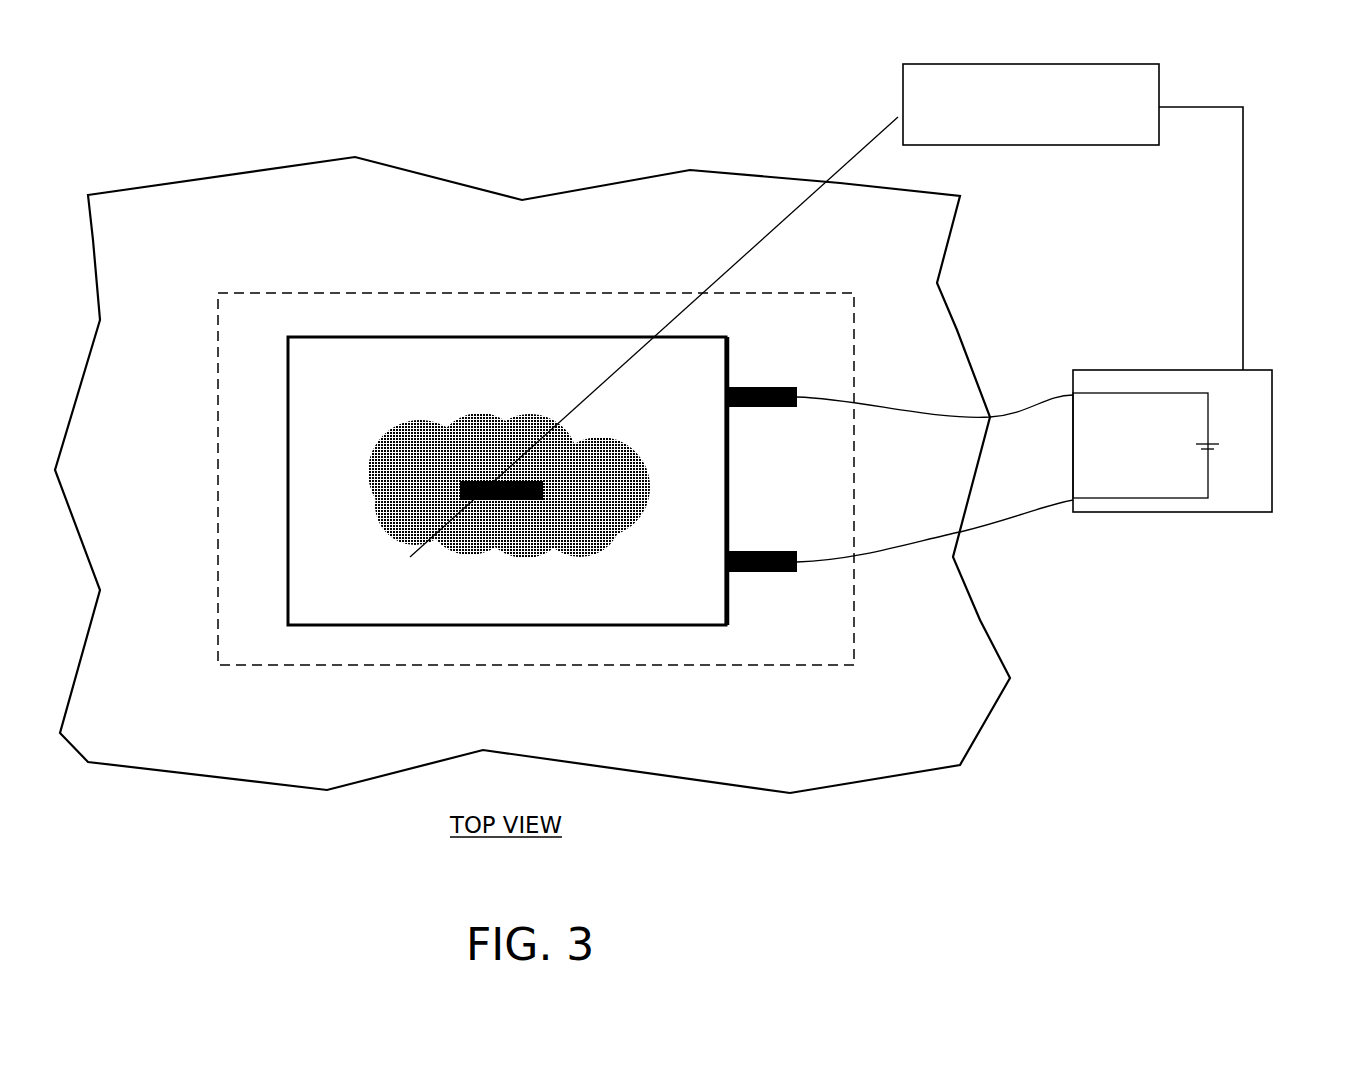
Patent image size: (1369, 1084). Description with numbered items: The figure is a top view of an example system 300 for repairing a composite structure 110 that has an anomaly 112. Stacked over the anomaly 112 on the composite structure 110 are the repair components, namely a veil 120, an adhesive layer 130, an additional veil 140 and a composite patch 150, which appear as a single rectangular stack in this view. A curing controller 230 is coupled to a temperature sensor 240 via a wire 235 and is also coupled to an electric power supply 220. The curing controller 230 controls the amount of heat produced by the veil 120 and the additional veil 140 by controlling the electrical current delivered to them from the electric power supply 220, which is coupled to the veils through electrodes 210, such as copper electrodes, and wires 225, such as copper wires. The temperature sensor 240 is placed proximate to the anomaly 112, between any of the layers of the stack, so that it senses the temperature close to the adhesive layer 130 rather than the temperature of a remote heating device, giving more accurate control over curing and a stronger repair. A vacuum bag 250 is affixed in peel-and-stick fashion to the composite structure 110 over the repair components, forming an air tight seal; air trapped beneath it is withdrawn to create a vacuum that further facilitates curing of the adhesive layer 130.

The composite structure 110 is at (802, 802).
The anomaly 112 is at (524, 568).
The veil 120 is at (594, 356).
The adhesive layer 130 is at (594, 356).
The additional veil 140 is at (594, 356).
The composite patch 150 is at (516, 329).
The electrodes 210 is at (762, 540).
The electric power supply 220 is at (1272, 410).
The wires 225 is at (1030, 426).
The curing controller 230 is at (1133, 64).
The wire 235 is at (763, 240).
The temperature sensor 240 is at (450, 521).
The vacuum bag 250 is at (830, 293).
The system 300 is at (184, 109).